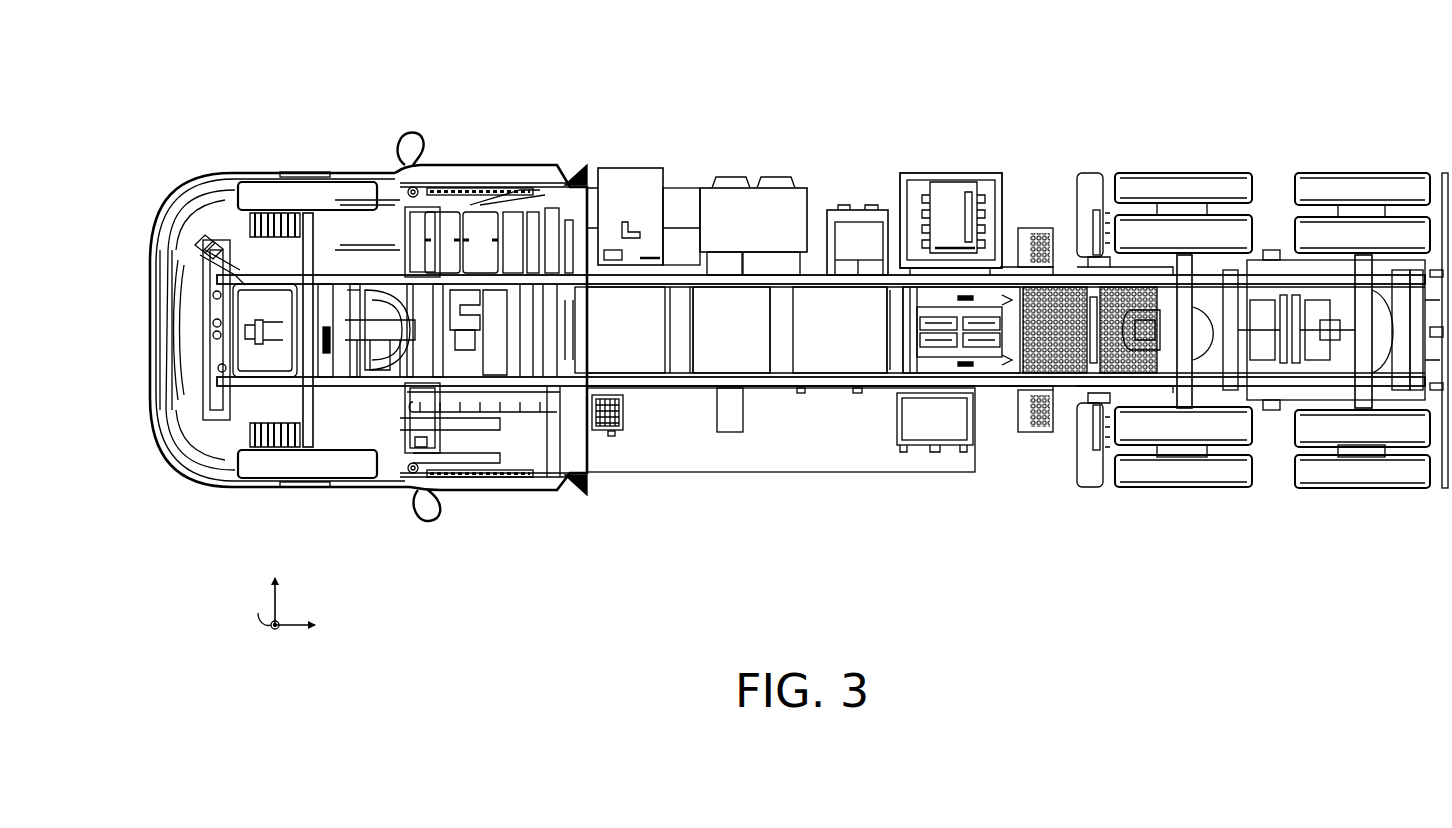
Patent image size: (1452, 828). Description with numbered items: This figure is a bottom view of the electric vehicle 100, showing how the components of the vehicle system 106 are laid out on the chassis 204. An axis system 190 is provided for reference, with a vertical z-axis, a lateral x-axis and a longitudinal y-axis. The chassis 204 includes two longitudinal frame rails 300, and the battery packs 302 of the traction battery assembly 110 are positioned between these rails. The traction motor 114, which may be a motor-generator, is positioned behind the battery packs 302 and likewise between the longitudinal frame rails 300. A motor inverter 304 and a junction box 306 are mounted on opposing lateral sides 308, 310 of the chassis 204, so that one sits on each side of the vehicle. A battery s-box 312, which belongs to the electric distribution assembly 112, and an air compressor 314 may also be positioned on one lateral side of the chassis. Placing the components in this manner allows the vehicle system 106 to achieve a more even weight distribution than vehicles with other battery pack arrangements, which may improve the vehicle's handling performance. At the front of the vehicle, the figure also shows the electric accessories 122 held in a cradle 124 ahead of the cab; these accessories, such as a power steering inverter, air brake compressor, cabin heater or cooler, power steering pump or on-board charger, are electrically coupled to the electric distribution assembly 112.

The electric vehicle 100 is at (193, 111).
The vehicle system 106 is at (719, 98).
The traction battery assembly 110 is at (818, 270).
The electric distribution assembly 112 is at (931, 157).
The traction motor 114 is at (975, 355).
The electric accessories 122 is at (253, 297).
The cradle 124 is at (195, 334).
The axis system 190 is at (299, 585).
The chassis 204 is at (772, 404).
The longitudinal frame rails 300 is at (818, 383).
The battery packs 302 is at (713, 350).
The motor inverter 304 is at (923, 424).
The junction box 306 is at (957, 182).
The lateral side 308 is at (787, 535).
The lateral side 310 is at (946, 127).
The battery s-box 312 is at (862, 240).
The air compressor 314 is at (627, 197).